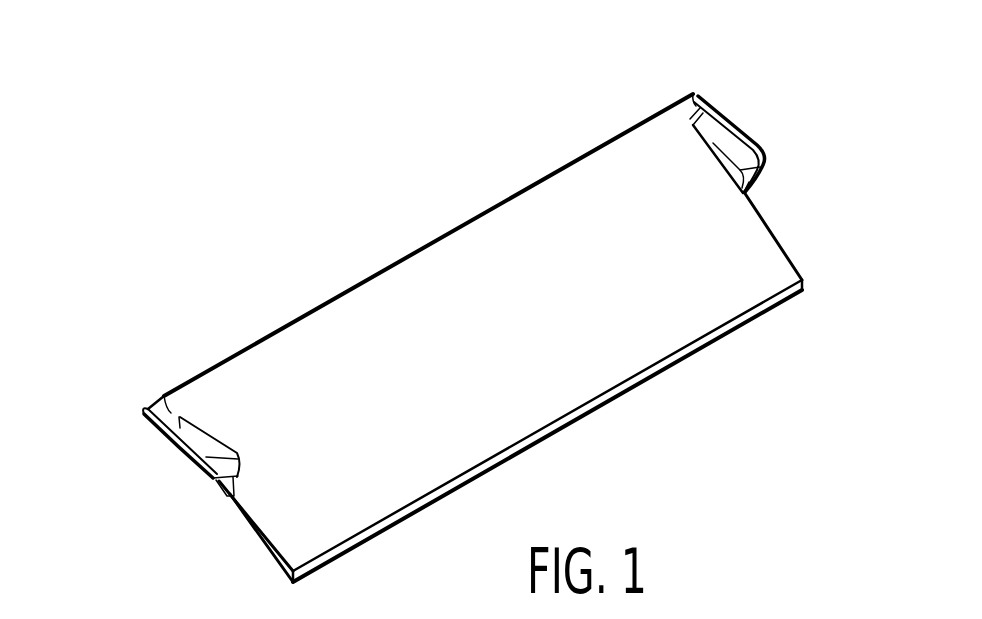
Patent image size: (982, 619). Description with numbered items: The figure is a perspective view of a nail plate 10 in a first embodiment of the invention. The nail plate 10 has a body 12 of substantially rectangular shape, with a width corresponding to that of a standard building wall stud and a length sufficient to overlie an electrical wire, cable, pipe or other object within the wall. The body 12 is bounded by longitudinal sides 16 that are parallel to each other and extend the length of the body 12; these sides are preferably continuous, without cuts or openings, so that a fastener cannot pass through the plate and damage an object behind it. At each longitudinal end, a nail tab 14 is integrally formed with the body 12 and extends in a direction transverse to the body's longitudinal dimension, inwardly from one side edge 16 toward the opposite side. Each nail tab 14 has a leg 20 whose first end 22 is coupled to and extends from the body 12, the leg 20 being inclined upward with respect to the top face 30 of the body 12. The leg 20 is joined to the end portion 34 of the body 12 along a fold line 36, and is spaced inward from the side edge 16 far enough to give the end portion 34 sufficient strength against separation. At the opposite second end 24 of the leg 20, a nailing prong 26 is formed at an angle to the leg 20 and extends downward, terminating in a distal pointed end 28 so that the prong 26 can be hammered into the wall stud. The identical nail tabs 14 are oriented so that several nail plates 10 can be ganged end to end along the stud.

The nail plate 10 is at (691, 428).
The body 12 is at (396, 489).
The nail tab 14 is at (757, 126).
The longitudinal sides 16 is at (384, 268).
The leg 20 is at (727, 136).
The first end 22 is at (702, 105).
The second end 24 is at (755, 145).
The nailing prong 26 is at (757, 172).
The distal pointed end 28 is at (743, 197).
The top face 30 is at (697, 295).
The end portion 34 is at (690, 96).
The fold line 36 is at (716, 116).